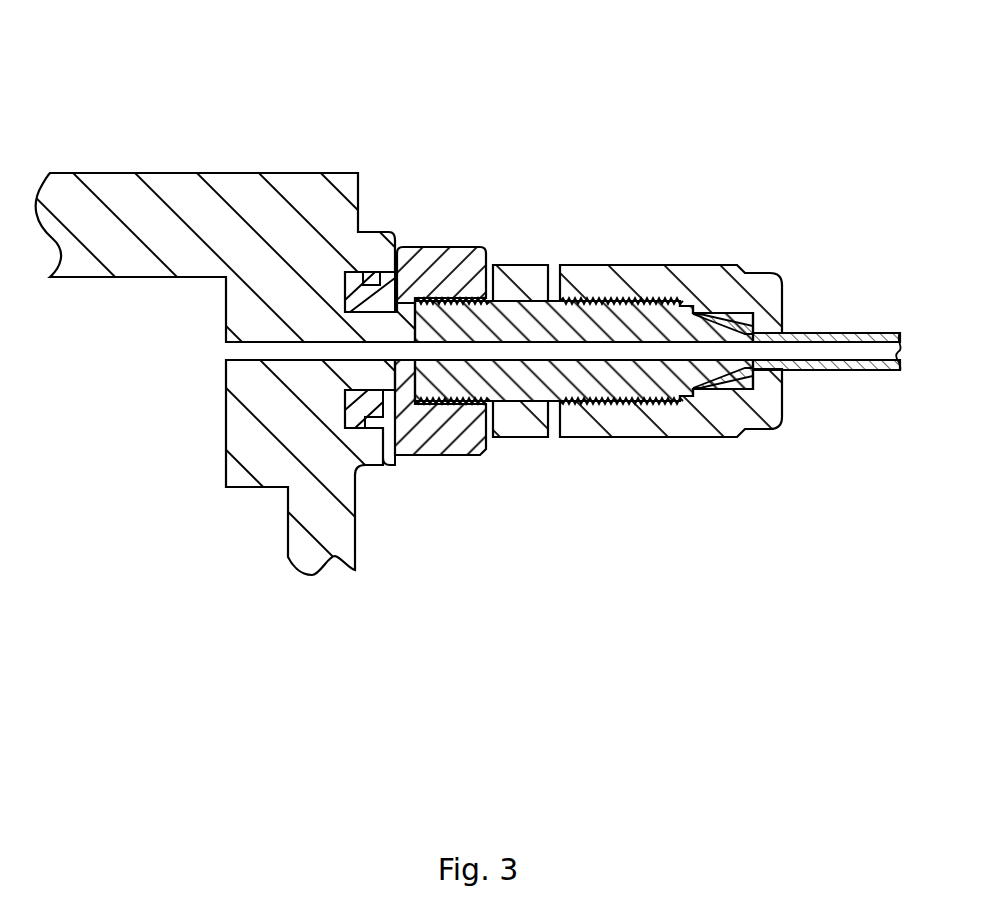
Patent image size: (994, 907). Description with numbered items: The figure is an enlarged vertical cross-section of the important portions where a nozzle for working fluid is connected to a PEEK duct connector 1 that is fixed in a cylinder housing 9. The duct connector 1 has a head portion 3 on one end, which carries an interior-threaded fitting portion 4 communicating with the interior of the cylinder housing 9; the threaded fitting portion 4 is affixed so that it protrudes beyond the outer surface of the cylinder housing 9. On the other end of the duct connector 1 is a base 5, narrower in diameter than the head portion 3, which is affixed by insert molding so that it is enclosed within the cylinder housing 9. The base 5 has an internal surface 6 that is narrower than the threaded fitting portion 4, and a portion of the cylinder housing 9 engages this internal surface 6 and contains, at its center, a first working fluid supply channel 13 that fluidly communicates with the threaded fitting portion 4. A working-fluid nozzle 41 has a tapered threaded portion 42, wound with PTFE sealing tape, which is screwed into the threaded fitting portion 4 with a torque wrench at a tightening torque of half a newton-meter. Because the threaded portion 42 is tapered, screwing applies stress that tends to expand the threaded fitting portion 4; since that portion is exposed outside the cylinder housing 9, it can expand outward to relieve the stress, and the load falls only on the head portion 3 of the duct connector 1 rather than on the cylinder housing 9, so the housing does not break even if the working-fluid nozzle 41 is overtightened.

The cylinder housing 9 is at (273, 232).
The base 5 is at (375, 283).
The duct connector 1 is at (422, 267).
The head portion 3 is at (448, 265).
The threaded fitting portion 4 is at (486, 255).
The working-fluid nozzle 41 is at (527, 312).
The threaded portion 42 is at (482, 452).
The internal surface 6 is at (385, 400).
The first working fluid supply channel 13 is at (392, 352).